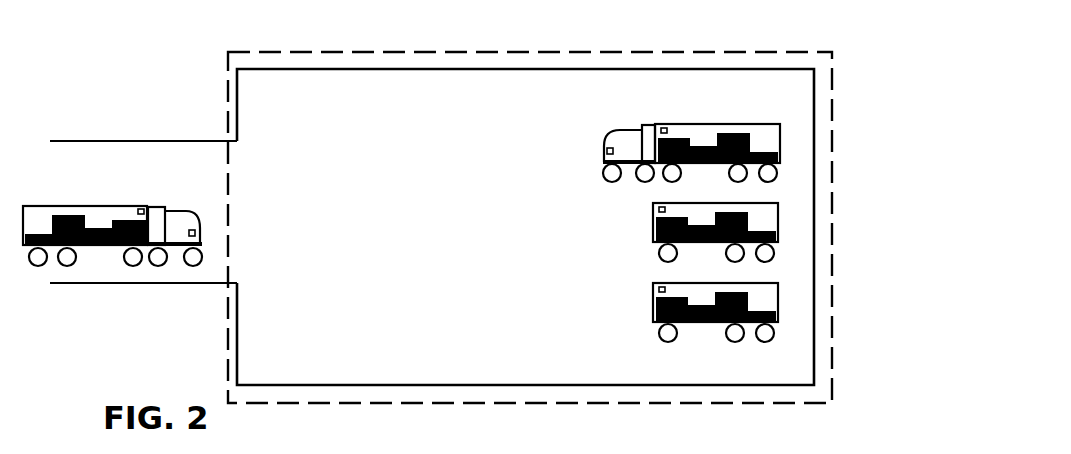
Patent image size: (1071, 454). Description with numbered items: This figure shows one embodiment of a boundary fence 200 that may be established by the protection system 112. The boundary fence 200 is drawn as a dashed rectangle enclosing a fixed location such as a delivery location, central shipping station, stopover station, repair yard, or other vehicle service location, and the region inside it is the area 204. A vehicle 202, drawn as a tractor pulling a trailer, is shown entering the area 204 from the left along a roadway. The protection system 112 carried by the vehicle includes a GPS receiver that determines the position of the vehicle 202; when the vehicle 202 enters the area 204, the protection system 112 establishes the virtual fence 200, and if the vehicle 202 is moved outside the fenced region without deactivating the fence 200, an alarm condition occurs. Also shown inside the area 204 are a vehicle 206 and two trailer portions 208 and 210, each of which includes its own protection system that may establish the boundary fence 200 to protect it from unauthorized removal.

The boundary fence 200 is at (458, 51).
The area 204 is at (622, 69).
The vehicle 202 is at (182, 208).
The protection system 112 is at (143, 206).
The vehicle 206 is at (612, 132).
The trailer portion 208 is at (652, 230).
The trailer portion 210 is at (652, 300).